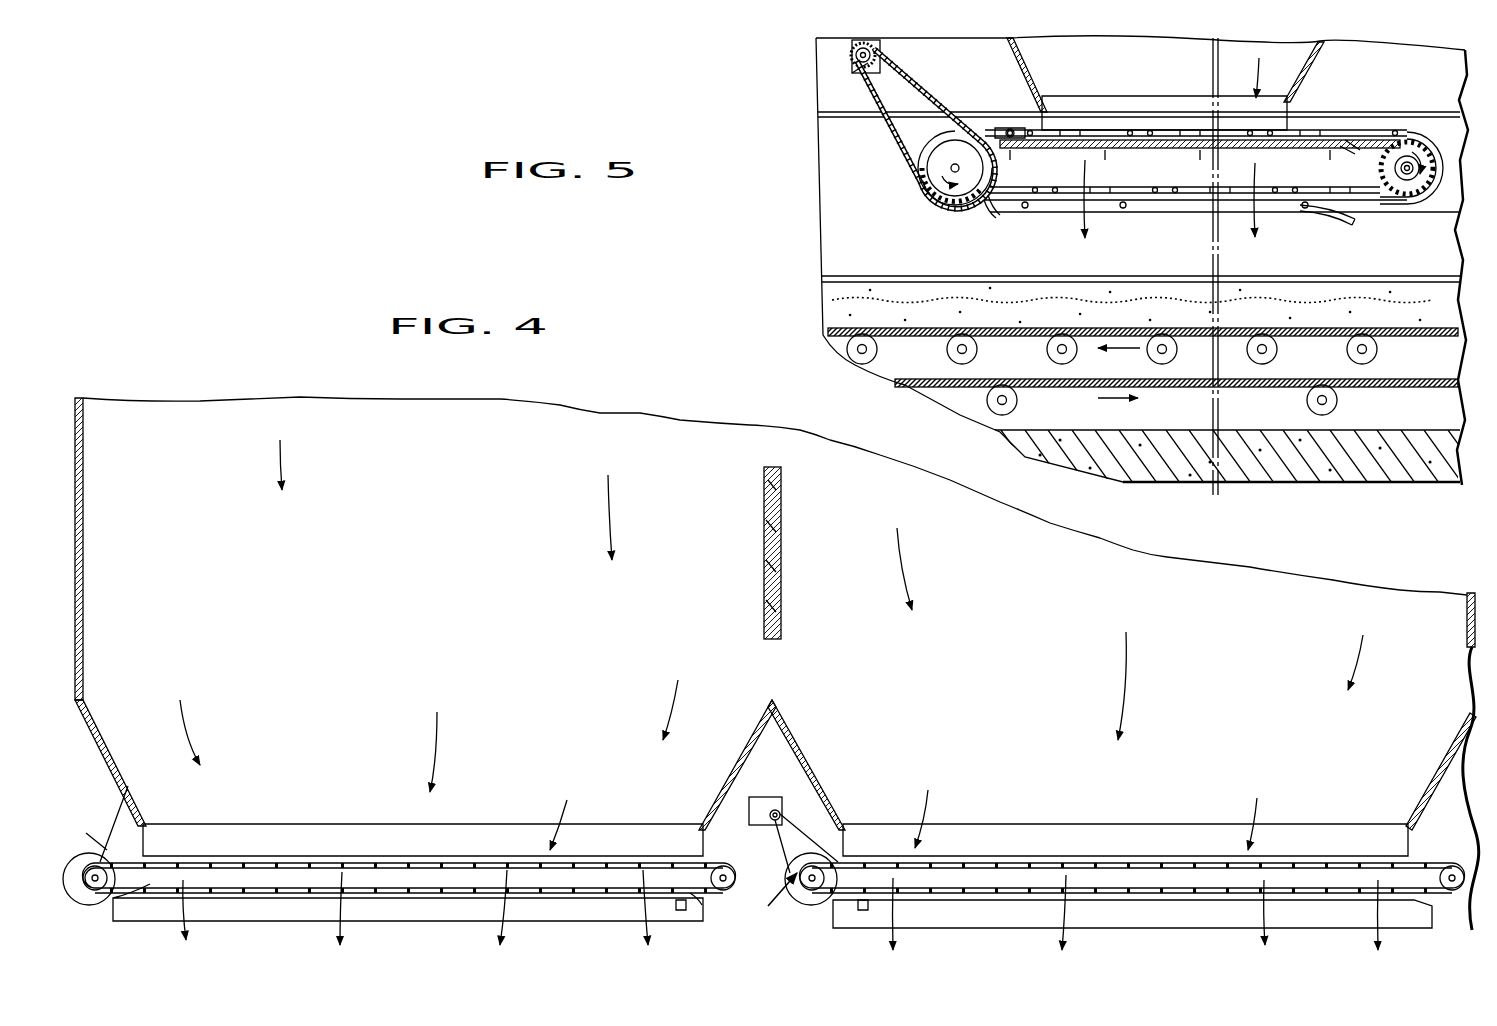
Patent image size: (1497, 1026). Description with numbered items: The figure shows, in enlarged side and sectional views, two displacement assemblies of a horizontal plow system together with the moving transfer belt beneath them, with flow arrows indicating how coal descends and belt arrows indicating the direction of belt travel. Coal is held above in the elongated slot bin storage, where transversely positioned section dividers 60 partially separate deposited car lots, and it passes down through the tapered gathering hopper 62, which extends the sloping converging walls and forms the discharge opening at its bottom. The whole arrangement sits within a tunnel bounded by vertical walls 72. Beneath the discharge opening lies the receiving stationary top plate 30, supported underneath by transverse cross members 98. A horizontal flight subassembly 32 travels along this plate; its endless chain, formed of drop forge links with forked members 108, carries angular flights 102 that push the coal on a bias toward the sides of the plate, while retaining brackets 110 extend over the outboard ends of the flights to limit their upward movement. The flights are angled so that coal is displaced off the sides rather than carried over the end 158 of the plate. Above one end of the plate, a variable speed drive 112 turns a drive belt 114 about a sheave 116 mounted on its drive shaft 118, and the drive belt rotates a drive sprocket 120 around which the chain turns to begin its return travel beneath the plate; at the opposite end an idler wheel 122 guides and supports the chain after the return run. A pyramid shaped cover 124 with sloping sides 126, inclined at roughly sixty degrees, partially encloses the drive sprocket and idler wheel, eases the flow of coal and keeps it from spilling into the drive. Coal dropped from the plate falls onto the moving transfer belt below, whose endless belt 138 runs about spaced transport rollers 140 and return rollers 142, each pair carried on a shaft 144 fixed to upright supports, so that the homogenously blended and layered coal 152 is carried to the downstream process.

In FIG. 5, the receiving stationary top plate 30 is at (1352, 138).
In FIG. 5, the horizontal flight subassembly 32 is at (868, 148).
In FIG. 4, the section divider 60 is at (762, 542).
In FIG. 5, the tapered gathering hopper 62 is at (1168, 96).
In FIG. 4, the tapered gathering hopper 62 is at (235, 830).
In FIG. 5, the vertical wall 72 is at (1340, 484).
In FIG. 5, the cross member 98 is at (1222, 171).
In FIG. 4, the cross member 98 is at (700, 882).
In FIG. 5, the angular flight 102 is at (1040, 140).
In FIG. 4, the angular flight 102 is at (366, 860).
In FIG. 5, the forked member 108 is at (1008, 132).
In FIG. 5, the retaining bracket 110 is at (985, 132).
In FIG. 5, the variable speed drive 112 is at (828, 74).
In FIG. 4, the variable speed drive 112 is at (750, 800).
In FIG. 5, the drive belt 114 is at (898, 78).
In FIG. 4, the drive belt 114 is at (128, 792).
In FIG. 5, the sheave 116 is at (868, 72).
In FIG. 5, the drive shaft 118 is at (852, 52).
In FIG. 5, the drive sprocket 120 is at (963, 182).
In FIG. 4, the drive sprocket 120 is at (100, 872).
In FIG. 5, the idler wheel 122 is at (1412, 150).
In FIG. 4, the idler wheel 122 is at (728, 892).
In FIG. 5, the pyramid shaped cover 124 is at (1090, 48).
In FIG. 4, the pyramid shaped cover 124 is at (748, 738).
In FIG. 5, the sloping side 126 is at (1028, 70).
In FIG. 4, the sloping side 126 is at (793, 712).
In FIG. 5, the endless belt 138 is at (1025, 326).
In FIG. 5, the transport roller 140 is at (1162, 338).
In FIG. 5, the return roller 142 is at (1017, 402).
In FIG. 5, the shaft 144 is at (1264, 338).
In FIG. 5, the homogenously blended and layered coal 152 is at (975, 300).
In FIG. 4, the end of the receiving stationary top plate 158 is at (768, 903).